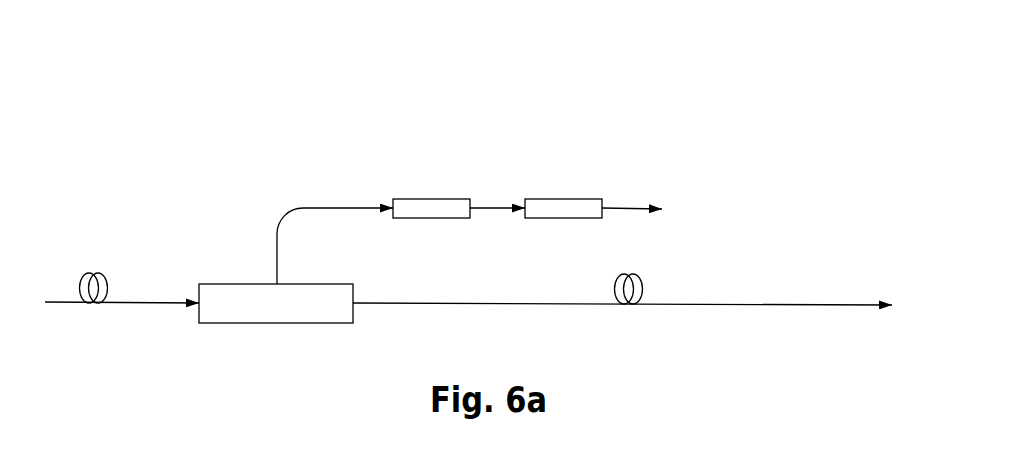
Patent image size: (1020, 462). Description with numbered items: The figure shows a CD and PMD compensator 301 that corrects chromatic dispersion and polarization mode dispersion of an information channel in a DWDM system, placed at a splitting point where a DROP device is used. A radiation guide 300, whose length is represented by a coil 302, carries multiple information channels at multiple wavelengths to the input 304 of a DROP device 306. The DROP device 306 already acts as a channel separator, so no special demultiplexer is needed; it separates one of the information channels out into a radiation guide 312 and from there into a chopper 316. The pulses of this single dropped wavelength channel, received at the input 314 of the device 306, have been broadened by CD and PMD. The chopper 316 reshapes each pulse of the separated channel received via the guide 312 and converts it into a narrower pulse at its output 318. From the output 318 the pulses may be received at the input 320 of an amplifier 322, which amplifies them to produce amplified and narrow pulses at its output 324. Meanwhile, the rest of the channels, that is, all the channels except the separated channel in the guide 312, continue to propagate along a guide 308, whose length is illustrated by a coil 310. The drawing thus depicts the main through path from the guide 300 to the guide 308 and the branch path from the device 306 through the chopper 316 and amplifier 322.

The radiation guide 300 is at (58, 302).
The CD and PMD compensator 301 is at (785, 148).
The coil 302 is at (108, 275).
The input 304 is at (142, 300).
The DROP device 306 is at (227, 284).
The guide 308 is at (505, 303).
The coil 310 is at (633, 277).
The radiation guide 312 is at (341, 209).
The input 314 is at (362, 203).
The chopper 316 is at (430, 199).
The output 318 is at (477, 205).
The input 320 is at (510, 215).
The amplifier 322 is at (533, 199).
The output 324 is at (618, 207).